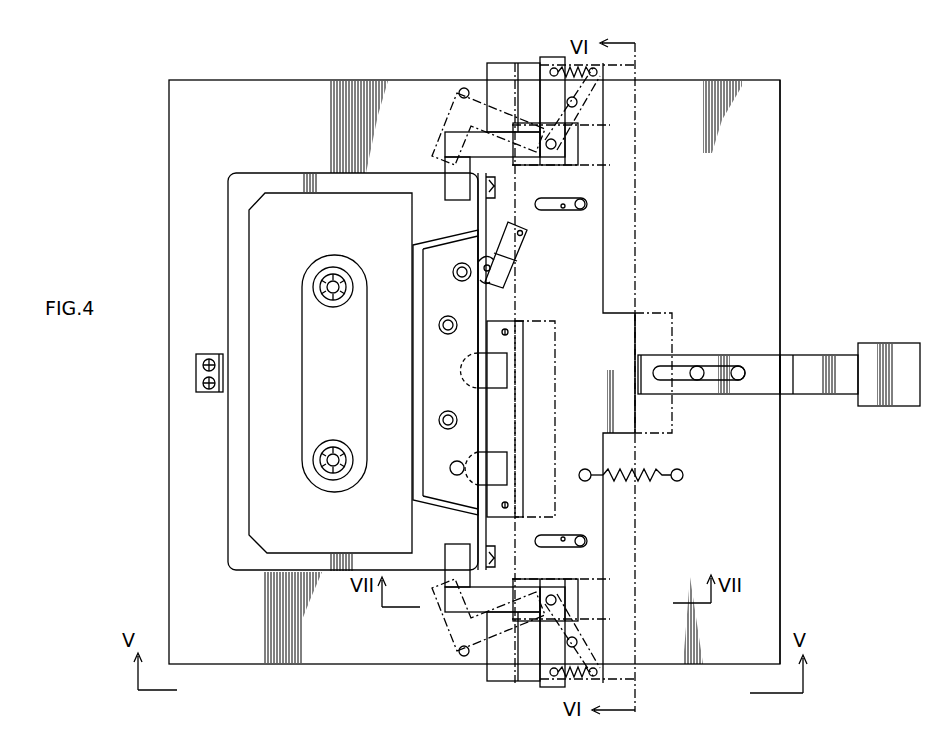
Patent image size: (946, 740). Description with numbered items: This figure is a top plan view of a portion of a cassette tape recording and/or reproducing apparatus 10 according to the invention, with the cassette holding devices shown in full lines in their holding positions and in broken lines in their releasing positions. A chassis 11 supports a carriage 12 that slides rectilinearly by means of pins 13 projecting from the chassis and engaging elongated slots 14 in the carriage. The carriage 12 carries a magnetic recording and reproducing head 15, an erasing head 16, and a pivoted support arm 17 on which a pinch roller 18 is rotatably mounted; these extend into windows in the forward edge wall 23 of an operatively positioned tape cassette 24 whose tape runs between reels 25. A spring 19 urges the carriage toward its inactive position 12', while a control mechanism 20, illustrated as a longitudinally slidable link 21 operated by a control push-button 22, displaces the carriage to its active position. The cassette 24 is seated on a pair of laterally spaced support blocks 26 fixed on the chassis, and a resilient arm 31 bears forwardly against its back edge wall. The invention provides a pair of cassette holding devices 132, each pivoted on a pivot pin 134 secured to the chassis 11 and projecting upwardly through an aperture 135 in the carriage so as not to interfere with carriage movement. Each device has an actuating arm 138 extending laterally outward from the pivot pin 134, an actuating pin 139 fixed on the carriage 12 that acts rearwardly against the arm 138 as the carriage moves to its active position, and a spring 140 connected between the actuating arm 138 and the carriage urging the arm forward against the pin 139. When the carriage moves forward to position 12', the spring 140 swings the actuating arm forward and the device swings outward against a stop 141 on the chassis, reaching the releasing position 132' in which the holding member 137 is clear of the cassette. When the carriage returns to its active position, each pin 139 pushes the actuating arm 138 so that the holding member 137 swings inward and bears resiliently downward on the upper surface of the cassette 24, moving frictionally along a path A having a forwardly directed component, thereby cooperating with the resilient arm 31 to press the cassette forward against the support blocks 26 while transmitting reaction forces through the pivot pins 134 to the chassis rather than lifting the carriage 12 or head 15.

The cassette tape recording and/or reproducing apparatus 10 is at (812, 180).
The chassis 11 is at (773, 120).
The carriage 12 is at (618, 373).
The inactive position of carriage 12' is at (655, 153).
The pins 13 is at (587, 204).
The elongated slots 14 is at (563, 209).
The magnetic recording and reproducing head 15 is at (505, 370).
The erasing head 16 is at (505, 468).
The pivoted support arm 17 is at (478, 265).
The pinch roller 18 is at (510, 255).
The spring 19 is at (648, 481).
The control mechanism 20 is at (822, 406).
The link 21 is at (750, 355).
The control push-button 22 is at (885, 343).
The forward edge wall of cassette 23 is at (497, 292).
The tape cassette 24 is at (290, 172).
The reels 25 is at (318, 287).
The support blocks 26 is at (495, 195).
The resilient arm 31 is at (196, 372).
The cassette holding device 132 is at (511, 372).
The cassette releasing position of holding device 132' is at (516, 374).
The pivot pin 134 is at (557, 143).
The aperture 135 is at (585, 165).
The holding member 137 is at (455, 198).
The actuating arm 138 is at (540, 95).
The actuating pin 139 is at (578, 103).
The spring 140 is at (596, 76).
The stop 141 is at (458, 93).
The paths of holding members A is at (440, 190).